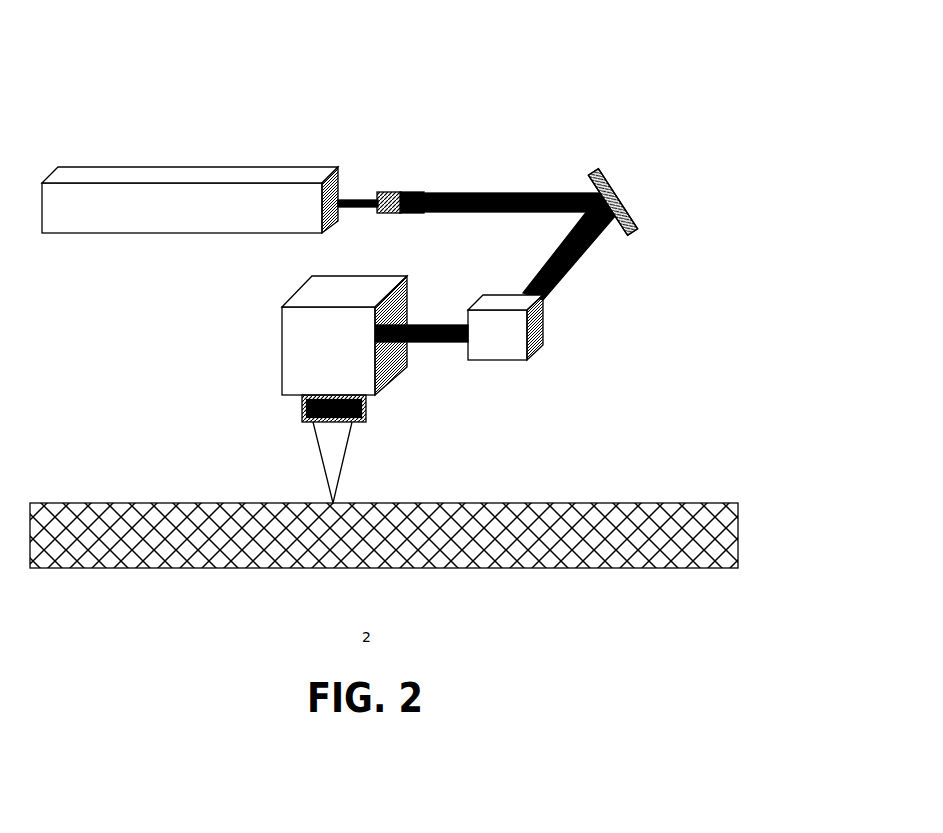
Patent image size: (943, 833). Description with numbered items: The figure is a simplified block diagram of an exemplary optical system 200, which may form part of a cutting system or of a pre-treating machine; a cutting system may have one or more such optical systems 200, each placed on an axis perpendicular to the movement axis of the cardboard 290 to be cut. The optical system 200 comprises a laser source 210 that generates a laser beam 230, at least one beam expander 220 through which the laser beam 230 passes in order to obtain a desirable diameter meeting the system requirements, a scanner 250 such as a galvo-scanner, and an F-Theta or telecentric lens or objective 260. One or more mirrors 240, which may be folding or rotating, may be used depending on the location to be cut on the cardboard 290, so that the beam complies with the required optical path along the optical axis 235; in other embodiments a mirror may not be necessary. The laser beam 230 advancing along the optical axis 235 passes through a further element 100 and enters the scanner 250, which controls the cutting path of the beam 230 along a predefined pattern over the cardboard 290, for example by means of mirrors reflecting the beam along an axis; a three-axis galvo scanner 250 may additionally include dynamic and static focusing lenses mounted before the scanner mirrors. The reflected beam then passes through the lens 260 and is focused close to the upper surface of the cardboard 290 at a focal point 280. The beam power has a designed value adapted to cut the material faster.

The optical system 200 is at (318, 62).
The laser source 210 is at (170, 175).
The beam expander 220 is at (407, 190).
The laser beam 230 is at (512, 197).
The mirror 240 is at (597, 172).
The optical device 100 is at (540, 327).
The optical axis 235 is at (435, 345).
The scanner 250 is at (282, 333).
The F-Theta or telecentric lens 260 is at (302, 408).
The focal point 280 is at (335, 500).
The cardboard 290 is at (123, 502).